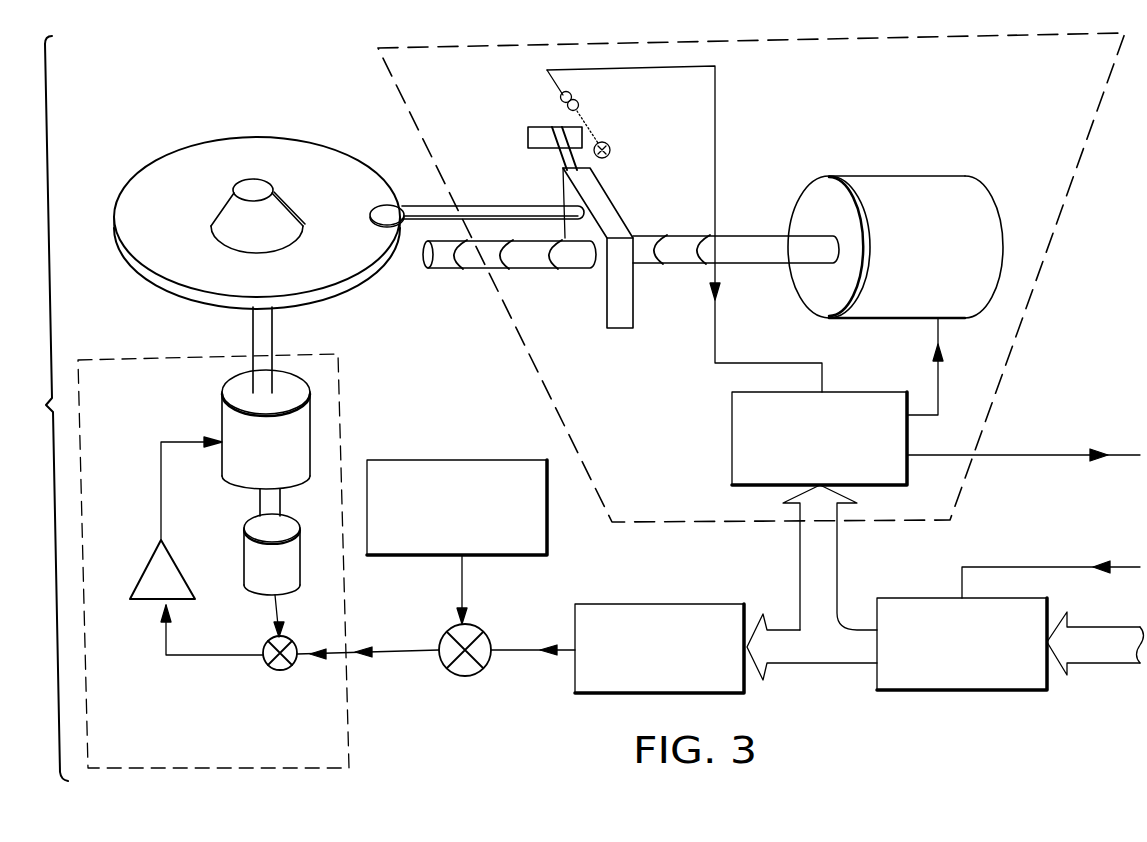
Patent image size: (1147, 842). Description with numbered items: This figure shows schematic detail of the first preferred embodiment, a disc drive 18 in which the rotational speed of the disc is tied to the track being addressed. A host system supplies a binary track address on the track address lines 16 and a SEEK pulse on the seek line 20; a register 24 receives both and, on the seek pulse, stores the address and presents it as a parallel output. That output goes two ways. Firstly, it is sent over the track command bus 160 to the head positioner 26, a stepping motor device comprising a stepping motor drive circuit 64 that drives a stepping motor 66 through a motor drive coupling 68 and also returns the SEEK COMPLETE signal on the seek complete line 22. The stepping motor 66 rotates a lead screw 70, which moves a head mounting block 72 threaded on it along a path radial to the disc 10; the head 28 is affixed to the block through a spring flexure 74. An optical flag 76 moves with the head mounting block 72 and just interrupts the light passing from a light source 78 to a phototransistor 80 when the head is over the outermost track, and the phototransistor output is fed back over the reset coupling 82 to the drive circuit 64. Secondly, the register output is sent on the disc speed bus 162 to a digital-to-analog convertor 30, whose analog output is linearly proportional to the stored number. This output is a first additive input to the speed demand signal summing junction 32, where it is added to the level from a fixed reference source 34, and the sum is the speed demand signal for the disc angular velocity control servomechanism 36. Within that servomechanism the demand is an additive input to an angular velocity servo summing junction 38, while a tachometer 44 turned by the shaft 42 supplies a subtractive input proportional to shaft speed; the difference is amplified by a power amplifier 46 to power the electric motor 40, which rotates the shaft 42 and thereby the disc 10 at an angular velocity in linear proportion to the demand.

The disc 10 is at (154, 263).
The track address lines 16 is at (1108, 664).
The disc drive 18 is at (41, 408).
The seek line 20 is at (1064, 566).
The seek complete line 22 is at (1062, 456).
The register 24 is at (925, 691).
The head positioner 26 is at (1056, 230).
The head 28 is at (371, 212).
The digital-to-analog convertor 30 is at (607, 694).
The speed demand signal summing junction 32 is at (444, 636).
The fixed reference source 34 is at (490, 460).
The disc angular velocity control servomechanism 36 is at (340, 718).
The angular velocity servo summing junction 38 is at (298, 643).
The electric motor 40 is at (229, 423).
The shaft 42 is at (257, 333).
The tachometer 44 is at (254, 582).
The power amplifier 46 is at (156, 585).
The stepping motor drive circuit 64 is at (888, 392).
The stepping motor 66 is at (901, 188).
The motor drive coupling 68 is at (933, 375).
The lead screw 70 is at (752, 247).
The head mounting block 72 is at (622, 318).
The spring flexure 74 is at (521, 205).
The optical flag 76 is at (540, 127).
The light source 78 is at (611, 148).
The phototransistor 80 is at (580, 98).
The reset coupling 82 is at (716, 330).
The track command bus 160 is at (829, 557).
The disc speed bus 162 is at (771, 658).